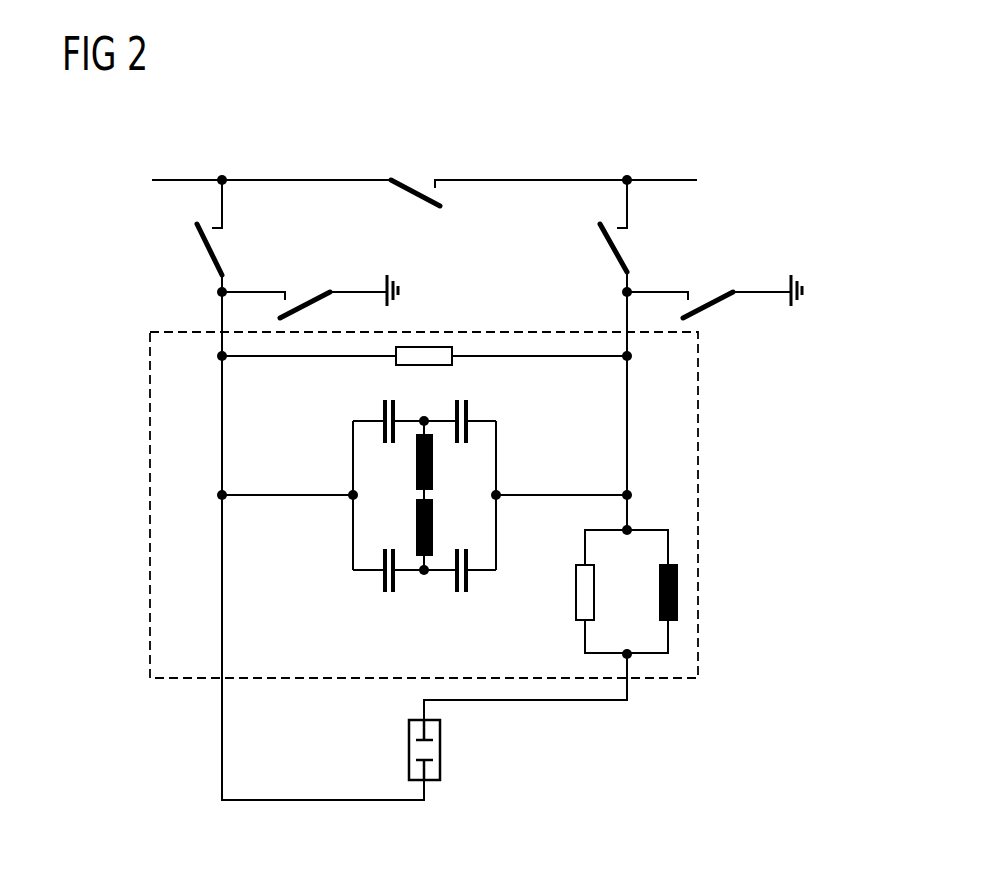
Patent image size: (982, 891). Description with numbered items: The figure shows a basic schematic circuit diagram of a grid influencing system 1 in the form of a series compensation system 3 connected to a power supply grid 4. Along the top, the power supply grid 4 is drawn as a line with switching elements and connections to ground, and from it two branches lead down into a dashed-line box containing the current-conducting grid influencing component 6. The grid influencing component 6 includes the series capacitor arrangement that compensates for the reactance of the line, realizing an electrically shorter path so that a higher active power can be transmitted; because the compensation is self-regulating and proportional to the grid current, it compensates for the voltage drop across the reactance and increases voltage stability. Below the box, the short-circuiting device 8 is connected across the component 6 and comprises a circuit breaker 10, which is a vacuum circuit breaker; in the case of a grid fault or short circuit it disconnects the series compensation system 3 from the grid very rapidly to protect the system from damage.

The grid influencing system 1 is at (672, 133).
The series compensation system 3 is at (430, 426).
The power supply grid 4 is at (525, 180).
The grid influencing component 6 is at (150, 525).
The short-circuiting device 8 is at (441, 737).
The circuit breaker 10 is at (409, 763).